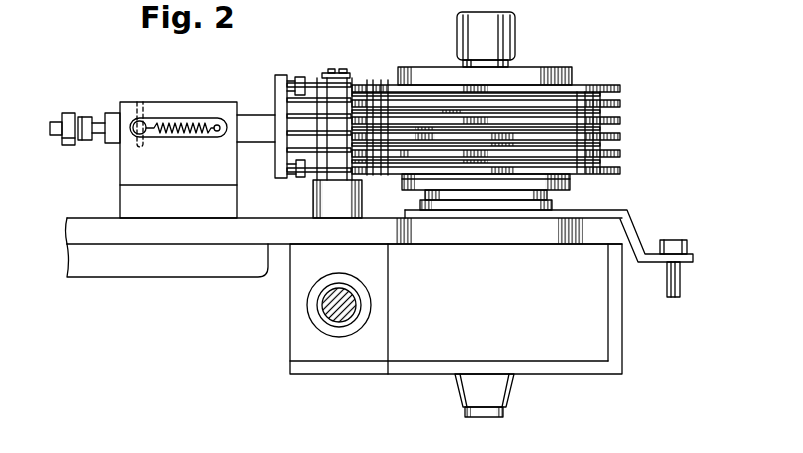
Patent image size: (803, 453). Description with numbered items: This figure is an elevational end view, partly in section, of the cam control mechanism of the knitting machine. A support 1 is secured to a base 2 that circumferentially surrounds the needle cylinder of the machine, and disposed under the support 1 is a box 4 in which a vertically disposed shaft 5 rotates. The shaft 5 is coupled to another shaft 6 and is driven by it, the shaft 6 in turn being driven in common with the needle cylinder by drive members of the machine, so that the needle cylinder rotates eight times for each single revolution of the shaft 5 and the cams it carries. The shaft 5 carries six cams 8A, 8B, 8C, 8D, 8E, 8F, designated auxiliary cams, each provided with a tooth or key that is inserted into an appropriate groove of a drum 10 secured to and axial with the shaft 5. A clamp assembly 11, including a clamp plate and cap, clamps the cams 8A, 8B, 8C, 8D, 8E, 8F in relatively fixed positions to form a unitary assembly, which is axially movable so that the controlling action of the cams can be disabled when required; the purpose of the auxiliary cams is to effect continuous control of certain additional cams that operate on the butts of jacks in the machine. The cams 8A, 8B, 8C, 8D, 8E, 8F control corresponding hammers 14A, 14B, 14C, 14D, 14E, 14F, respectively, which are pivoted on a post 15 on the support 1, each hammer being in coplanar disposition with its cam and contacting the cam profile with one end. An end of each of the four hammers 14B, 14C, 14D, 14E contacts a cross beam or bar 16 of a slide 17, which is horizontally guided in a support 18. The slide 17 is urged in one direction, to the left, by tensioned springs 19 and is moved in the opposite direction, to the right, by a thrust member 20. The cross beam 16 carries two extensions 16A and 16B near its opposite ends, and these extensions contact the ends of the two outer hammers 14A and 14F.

The support 1 is at (97, 233).
The base 2 is at (177, 267).
The box 4 is at (290, 338).
The shaft 5 is at (458, 412).
The shaft 6 is at (334, 320).
The cam 8A is at (621, 171).
The cam 8B is at (621, 153).
The cam 8C is at (621, 136).
The cam 8D is at (621, 118).
The cam 8E is at (621, 101).
The cam 8F is at (610, 86).
The drum 10 is at (563, 189).
The clamp assembly 11 is at (458, 50).
The hammer 14A is at (313, 173).
The hammer 14B is at (290, 149).
The hammer 14C is at (290, 132).
The hammer 14D is at (297, 115).
The hammer 14E is at (313, 99).
The hammer 14F is at (314, 84).
The post 15 is at (336, 73).
The cross beam 16 is at (276, 157).
The extension 16A is at (298, 178).
The extension 16B is at (302, 77).
The slide 17 is at (258, 117).
The support 18 is at (132, 102).
The spring 19 is at (185, 139).
The thrust member 20 is at (68, 113).